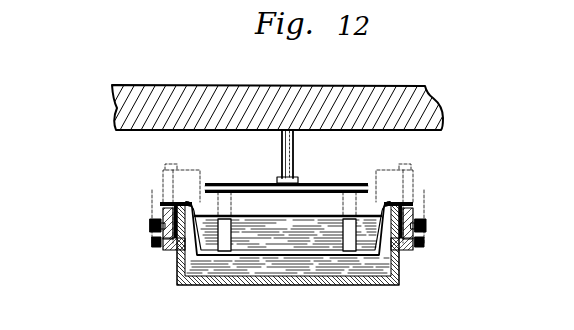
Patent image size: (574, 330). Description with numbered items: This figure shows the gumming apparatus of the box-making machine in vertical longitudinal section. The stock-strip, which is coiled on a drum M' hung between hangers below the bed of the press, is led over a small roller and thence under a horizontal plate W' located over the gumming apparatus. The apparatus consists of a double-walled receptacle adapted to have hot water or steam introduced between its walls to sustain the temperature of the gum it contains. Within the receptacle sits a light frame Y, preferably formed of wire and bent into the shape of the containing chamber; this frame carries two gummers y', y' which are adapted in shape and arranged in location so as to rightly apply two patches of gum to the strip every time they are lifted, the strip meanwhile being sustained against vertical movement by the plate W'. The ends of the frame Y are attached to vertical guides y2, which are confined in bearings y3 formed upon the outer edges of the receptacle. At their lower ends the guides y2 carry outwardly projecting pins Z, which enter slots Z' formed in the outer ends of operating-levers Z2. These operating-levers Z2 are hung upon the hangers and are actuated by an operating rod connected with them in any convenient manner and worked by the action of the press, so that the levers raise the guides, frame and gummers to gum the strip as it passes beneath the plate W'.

The horizontal plate W' is at (273, 157).
The drum M' is at (286, 171).
The light frame Y is at (278, 248).
The gummers y' is at (287, 221).
The vertical guides y2 is at (160, 227).
The bearings y3 is at (150, 237).
The outwardly projecting pins Z is at (287, 238).
The slots Z' is at (277, 260).
The operating-levers Z2 is at (150, 231).